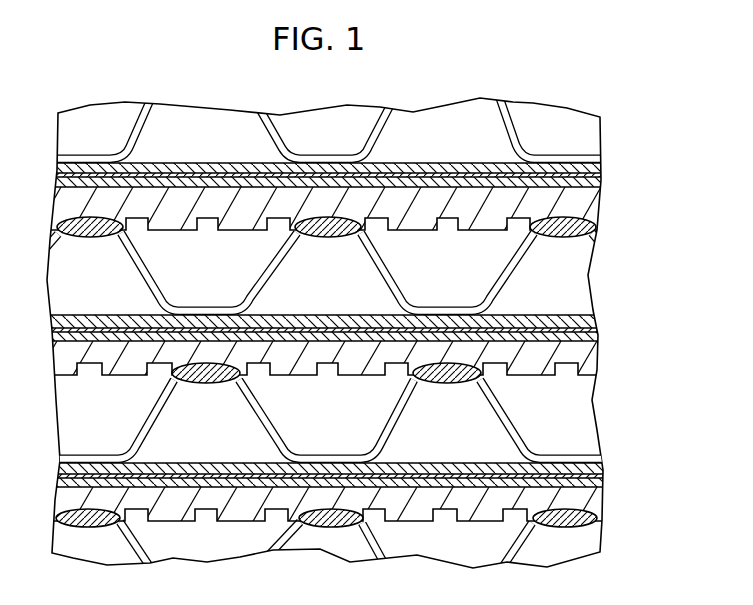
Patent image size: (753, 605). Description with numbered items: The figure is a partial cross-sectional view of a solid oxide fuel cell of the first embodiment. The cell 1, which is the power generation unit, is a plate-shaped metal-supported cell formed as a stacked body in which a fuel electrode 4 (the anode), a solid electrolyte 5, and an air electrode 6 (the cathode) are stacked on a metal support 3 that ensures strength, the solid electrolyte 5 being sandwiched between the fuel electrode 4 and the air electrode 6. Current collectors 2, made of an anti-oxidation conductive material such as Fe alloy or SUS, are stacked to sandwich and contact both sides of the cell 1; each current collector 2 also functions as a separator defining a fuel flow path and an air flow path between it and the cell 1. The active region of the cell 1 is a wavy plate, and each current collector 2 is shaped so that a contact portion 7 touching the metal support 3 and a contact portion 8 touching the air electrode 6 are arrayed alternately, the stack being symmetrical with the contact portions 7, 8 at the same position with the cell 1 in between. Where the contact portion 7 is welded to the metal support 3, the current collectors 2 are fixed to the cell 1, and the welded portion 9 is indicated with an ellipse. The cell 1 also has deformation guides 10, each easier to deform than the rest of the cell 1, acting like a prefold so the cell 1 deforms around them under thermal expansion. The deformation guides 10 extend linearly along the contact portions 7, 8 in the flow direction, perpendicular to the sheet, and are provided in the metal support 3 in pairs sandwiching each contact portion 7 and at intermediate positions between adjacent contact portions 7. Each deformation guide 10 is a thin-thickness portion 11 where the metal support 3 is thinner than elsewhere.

The cell 1 is at (364, 353).
The current collector 2 is at (132, 258).
The metal support 3 is at (590, 362).
The fuel electrode 4 is at (598, 340).
The solid electrolyte 5 is at (598, 331).
The air electrode 6 is at (598, 322).
The contact portion 7 is at (294, 241).
The contact portion 8 is at (201, 290).
The welded portion 9 is at (336, 241).
The deformation guide 10 is at (308, 383).
The thin-thickness portion 11 is at (152, 367).